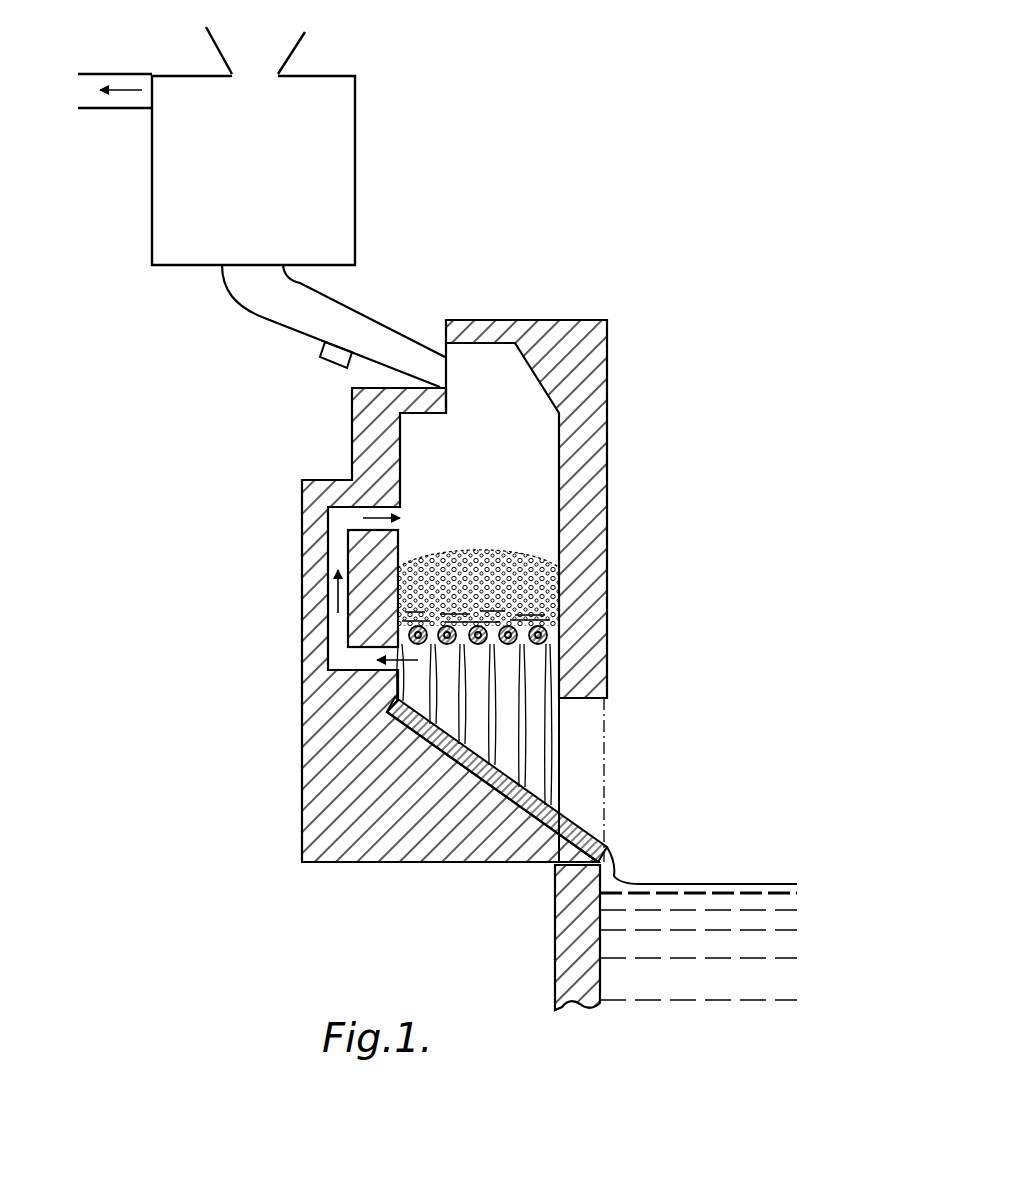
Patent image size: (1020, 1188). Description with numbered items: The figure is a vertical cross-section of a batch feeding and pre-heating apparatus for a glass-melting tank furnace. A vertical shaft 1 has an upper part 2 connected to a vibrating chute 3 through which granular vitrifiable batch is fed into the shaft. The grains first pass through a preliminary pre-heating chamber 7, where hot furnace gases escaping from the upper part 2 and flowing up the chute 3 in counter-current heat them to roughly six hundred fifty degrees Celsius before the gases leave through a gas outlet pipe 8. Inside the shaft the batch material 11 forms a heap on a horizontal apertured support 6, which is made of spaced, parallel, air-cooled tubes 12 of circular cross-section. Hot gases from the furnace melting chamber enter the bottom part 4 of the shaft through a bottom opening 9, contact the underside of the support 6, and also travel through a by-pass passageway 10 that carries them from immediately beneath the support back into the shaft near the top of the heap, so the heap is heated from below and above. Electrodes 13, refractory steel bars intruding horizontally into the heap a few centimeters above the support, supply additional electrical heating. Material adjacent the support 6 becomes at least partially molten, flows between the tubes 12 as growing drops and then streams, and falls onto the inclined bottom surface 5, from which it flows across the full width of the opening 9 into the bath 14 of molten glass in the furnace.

The vertical shaft 1 is at (607, 437).
The upper part 2 is at (494, 445).
The vibrating chute 3 is at (360, 312).
The bottom part 4 is at (486, 708).
The inclined bottom surface 5 is at (580, 812).
The horizontal apertured support 6 is at (545, 630).
The pre-heating chamber 7 is at (355, 162).
The gas outlet pipe 8 is at (118, 110).
The bottom opening 9 is at (594, 748).
The by-pass passageway 10 is at (330, 602).
The batch material 11 is at (484, 591).
The tubes 12 is at (540, 647).
The electrodes 13 is at (560, 590).
The bath of molten glass 14 is at (720, 971).